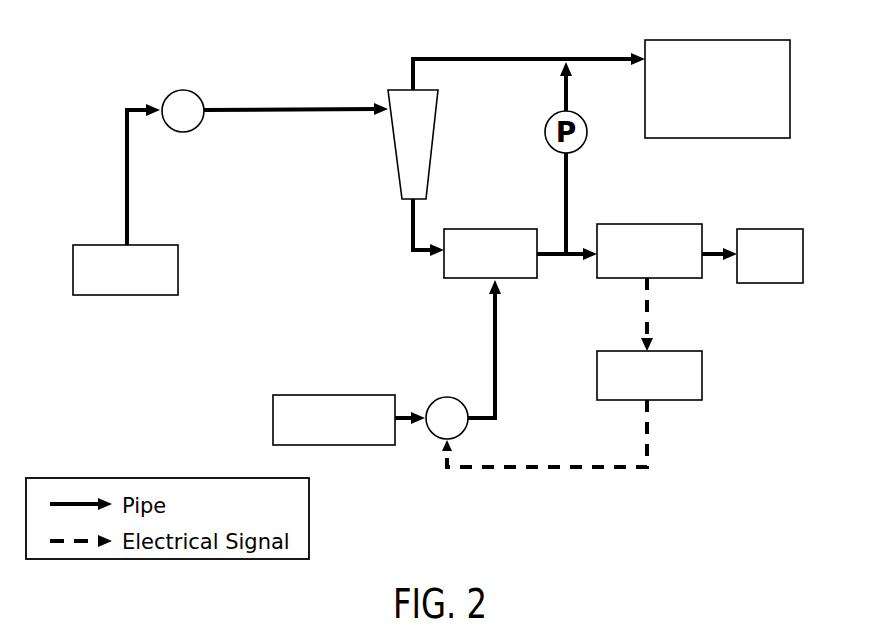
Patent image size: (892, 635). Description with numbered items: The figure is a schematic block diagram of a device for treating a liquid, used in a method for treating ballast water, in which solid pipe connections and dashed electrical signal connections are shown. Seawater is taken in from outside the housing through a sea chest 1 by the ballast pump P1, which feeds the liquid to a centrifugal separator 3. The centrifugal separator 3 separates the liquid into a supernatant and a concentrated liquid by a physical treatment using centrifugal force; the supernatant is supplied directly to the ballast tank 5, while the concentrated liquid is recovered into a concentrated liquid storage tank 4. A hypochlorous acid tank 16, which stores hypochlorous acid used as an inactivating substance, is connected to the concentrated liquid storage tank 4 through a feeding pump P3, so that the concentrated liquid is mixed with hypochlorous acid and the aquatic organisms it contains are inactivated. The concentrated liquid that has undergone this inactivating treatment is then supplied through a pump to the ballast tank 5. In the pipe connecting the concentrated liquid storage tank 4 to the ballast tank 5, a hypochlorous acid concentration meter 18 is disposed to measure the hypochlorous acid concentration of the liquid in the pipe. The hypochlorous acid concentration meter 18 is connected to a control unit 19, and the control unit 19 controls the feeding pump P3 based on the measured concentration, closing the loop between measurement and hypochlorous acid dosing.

The sea chest 1 is at (125, 295).
The ballast pump P1 is at (183, 133).
The centrifugal separator 3 is at (433, 153).
The concentrated liquid storage tank 4 is at (482, 229).
The ballast tank 5 is at (732, 138).
The hypochlorous acid tank 16 is at (367, 445).
The feeding pump P3 is at (438, 440).
The hypochlorous acid concentration meter 18 is at (625, 224).
The control unit 19 is at (683, 400).